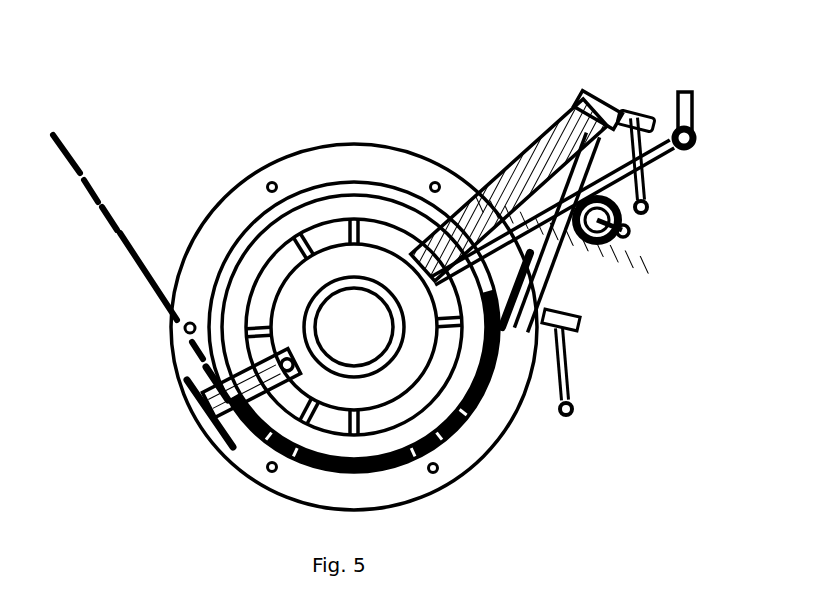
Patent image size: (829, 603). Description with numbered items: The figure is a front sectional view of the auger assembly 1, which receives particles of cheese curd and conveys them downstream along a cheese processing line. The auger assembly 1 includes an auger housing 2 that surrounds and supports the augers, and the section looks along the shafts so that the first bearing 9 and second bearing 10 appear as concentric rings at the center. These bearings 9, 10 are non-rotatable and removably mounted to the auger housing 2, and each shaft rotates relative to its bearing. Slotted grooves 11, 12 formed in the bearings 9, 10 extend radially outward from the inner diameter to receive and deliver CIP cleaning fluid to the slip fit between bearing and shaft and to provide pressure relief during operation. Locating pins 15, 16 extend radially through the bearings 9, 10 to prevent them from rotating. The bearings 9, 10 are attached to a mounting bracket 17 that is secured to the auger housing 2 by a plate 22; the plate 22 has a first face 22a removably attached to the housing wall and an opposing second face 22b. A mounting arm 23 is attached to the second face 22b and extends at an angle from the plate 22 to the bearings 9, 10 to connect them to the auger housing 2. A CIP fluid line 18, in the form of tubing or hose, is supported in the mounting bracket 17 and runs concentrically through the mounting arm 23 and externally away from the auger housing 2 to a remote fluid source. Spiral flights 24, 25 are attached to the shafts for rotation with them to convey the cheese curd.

The auger assembly 1 is at (216, 236).
The auger housing 2 is at (128, 254).
The first bearing 9 is at (428, 362).
The second bearing 10 is at (392, 380).
The slotted groove 11 is at (499, 198).
The slotted groove 12 is at (388, 305).
The locating pin 15 is at (354, 274).
The locating pin 16 is at (297, 190).
The mounting bracket 17 is at (645, 95).
The CIP fluid line 18 is at (650, 206).
The plate 22 is at (618, 250).
The first face 22a is at (625, 162).
The second face 22b is at (580, 110).
The mounting arm 23 is at (540, 288).
The first spiral flight 24 is at (453, 330).
The second spiral flight 25 is at (458, 378).